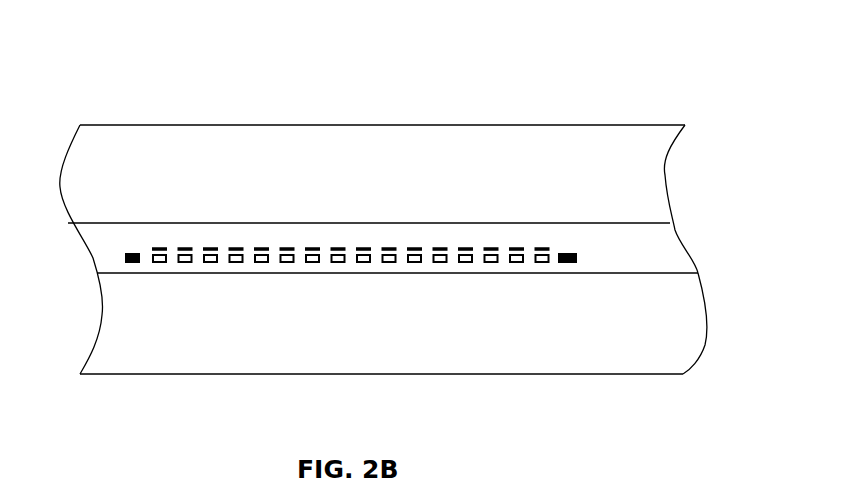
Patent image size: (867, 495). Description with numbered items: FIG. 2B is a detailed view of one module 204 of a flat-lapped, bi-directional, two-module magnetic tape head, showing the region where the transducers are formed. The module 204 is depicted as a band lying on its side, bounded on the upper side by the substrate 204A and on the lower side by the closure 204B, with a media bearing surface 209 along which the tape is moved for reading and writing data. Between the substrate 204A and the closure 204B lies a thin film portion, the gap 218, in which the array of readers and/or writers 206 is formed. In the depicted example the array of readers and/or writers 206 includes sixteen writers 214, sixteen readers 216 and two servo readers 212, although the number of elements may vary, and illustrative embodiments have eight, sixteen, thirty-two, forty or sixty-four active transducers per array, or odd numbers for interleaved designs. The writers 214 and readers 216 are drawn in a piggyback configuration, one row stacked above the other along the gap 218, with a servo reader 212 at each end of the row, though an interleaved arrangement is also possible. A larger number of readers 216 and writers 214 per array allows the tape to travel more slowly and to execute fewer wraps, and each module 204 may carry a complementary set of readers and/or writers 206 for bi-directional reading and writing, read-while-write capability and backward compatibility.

The module 204 is at (92, 100).
The substrate 204A is at (183, 125).
The closure 204B is at (233, 375).
The media bearing surface 209 is at (310, 190).
The writers 214 is at (465, 247).
The readers 216 is at (465, 263).
The servo readers 212 is at (125, 258).
The readers and/or writers 206 is at (600, 246).
The gap 218 is at (688, 245).